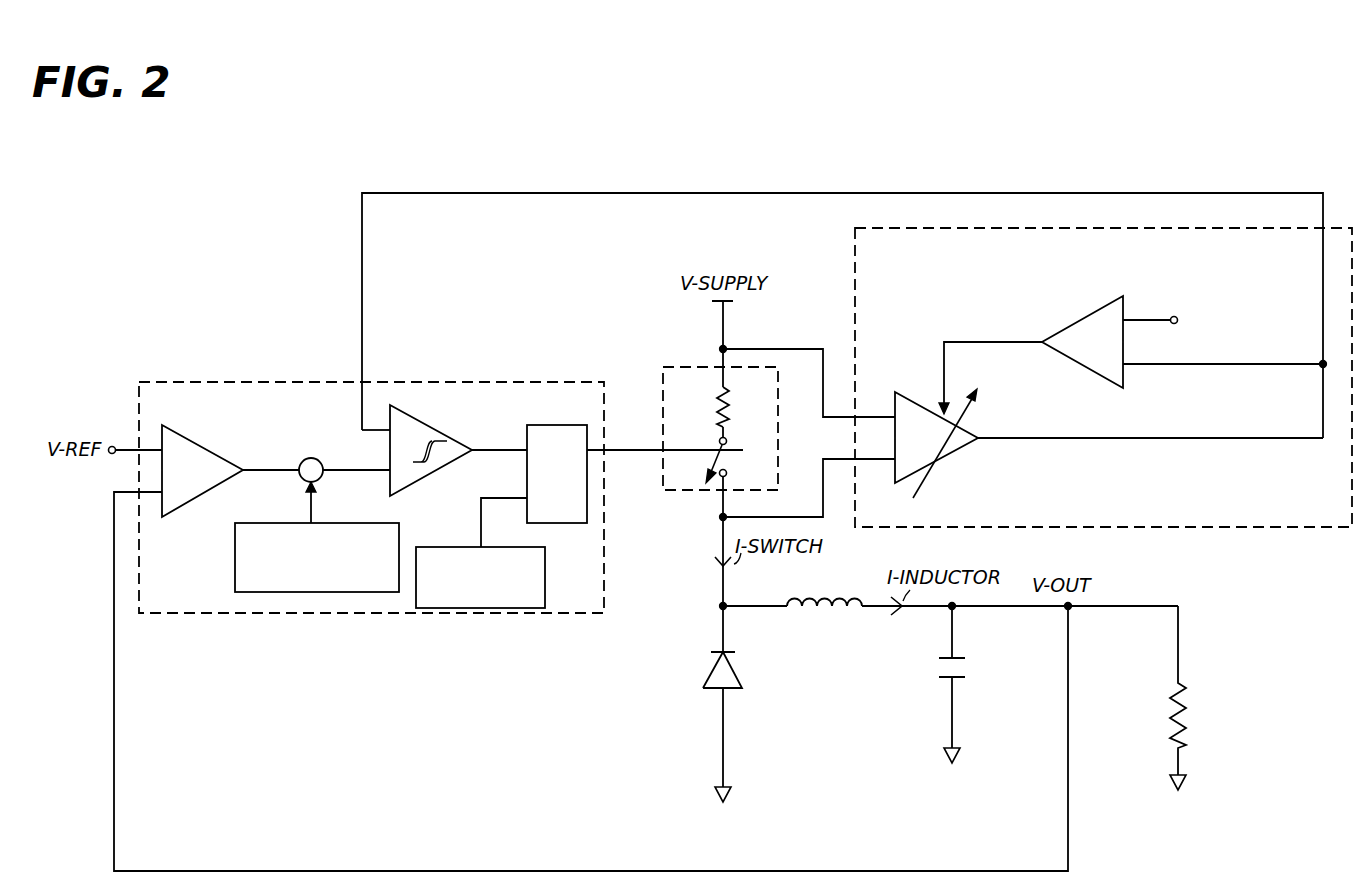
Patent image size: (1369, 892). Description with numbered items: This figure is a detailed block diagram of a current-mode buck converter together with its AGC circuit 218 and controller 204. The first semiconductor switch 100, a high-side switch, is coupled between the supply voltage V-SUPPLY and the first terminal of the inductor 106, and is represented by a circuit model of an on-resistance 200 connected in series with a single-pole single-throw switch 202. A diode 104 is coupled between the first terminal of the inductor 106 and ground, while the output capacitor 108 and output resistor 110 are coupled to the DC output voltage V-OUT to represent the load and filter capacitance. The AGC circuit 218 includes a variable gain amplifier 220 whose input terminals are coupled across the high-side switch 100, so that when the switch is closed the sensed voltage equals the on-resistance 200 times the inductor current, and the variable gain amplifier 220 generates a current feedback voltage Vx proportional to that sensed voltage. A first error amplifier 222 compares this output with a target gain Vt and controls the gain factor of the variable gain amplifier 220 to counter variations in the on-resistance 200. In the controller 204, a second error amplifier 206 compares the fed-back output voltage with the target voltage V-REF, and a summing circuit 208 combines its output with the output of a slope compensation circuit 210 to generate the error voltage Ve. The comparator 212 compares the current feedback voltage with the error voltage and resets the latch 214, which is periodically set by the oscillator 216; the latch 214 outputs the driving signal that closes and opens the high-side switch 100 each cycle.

The first semiconductor switch 100 is at (775, 486).
The diode 104 is at (738, 664).
The inductor 106 is at (829, 618).
The output capacitor 108 is at (945, 683).
The output resistor 110 is at (1190, 706).
The on-resistance 200 is at (712, 400).
The single-pole single-throw switch 202 is at (727, 454).
The controller 204 is at (338, 615).
The second error amplifier 206 is at (190, 503).
The summing circuit 208 is at (305, 458).
The slope compensation circuit 210 is at (235, 569).
The comparator 212 is at (422, 484).
The latch 214 is at (560, 524).
The oscillator 216 is at (545, 572).
The AGC circuit 218 is at (1015, 527).
The variable gain amplifier 220 is at (940, 466).
The first error amplifier 222 is at (1090, 315).